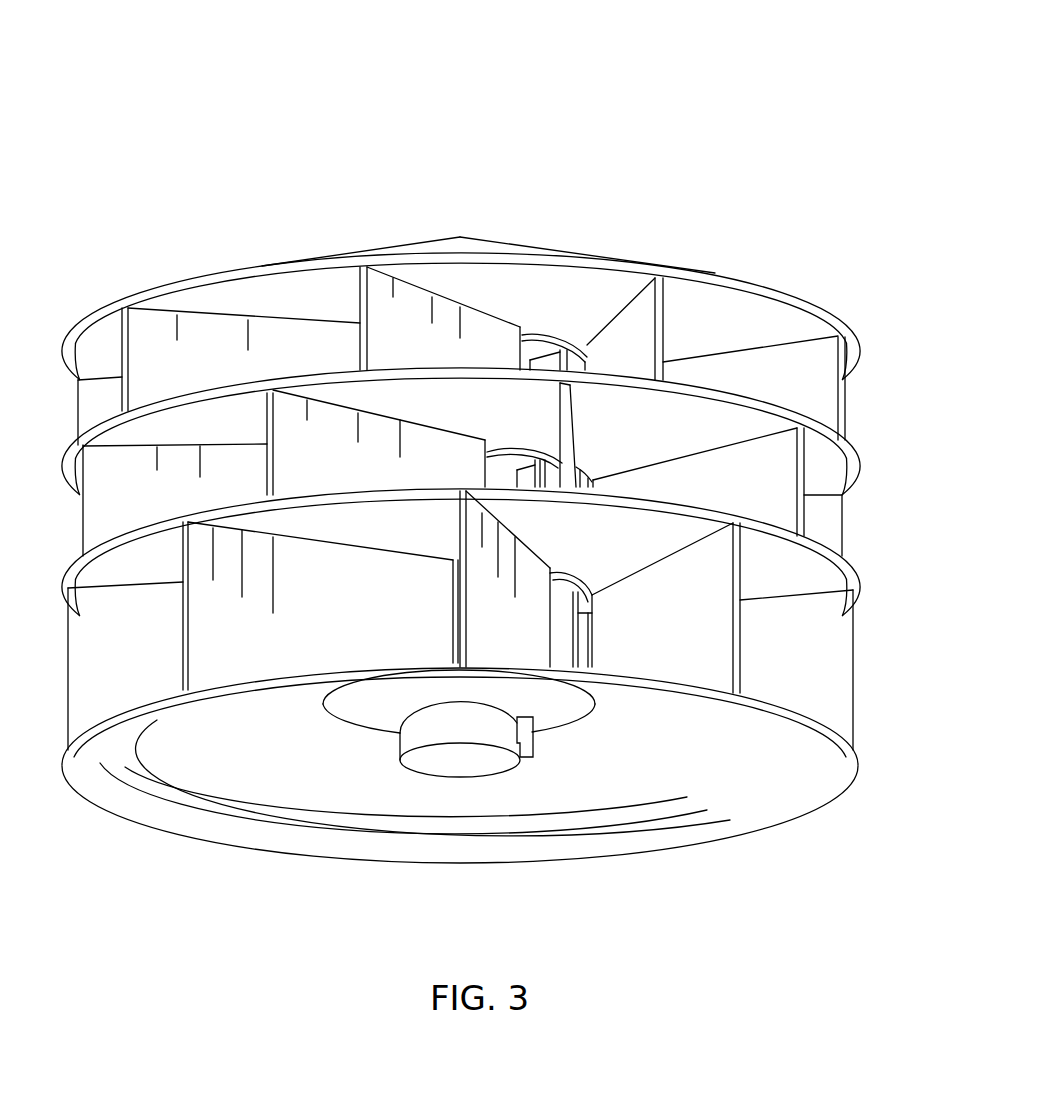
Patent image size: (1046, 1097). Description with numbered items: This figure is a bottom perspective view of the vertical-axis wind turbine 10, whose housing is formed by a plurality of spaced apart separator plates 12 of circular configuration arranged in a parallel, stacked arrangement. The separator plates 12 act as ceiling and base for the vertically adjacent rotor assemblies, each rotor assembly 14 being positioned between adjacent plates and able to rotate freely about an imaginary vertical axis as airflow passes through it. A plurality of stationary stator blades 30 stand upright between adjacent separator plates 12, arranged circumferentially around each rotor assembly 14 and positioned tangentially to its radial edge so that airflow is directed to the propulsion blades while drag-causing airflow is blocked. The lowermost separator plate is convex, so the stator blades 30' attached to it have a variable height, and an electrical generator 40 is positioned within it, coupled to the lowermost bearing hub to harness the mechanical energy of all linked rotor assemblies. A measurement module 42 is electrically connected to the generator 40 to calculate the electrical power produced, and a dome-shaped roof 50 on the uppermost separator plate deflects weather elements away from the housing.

The vertical-axis wind turbine 10 is at (752, 152).
The separator plate 12 is at (733, 308).
The rotor assembly 14 is at (558, 330).
The stator blade 30 is at (464, 401).
The stator blade 30' is at (460, 592).
The electrical generator 40 is at (420, 740).
The measurement module 42 is at (528, 734).
The roof 50 is at (461, 238).